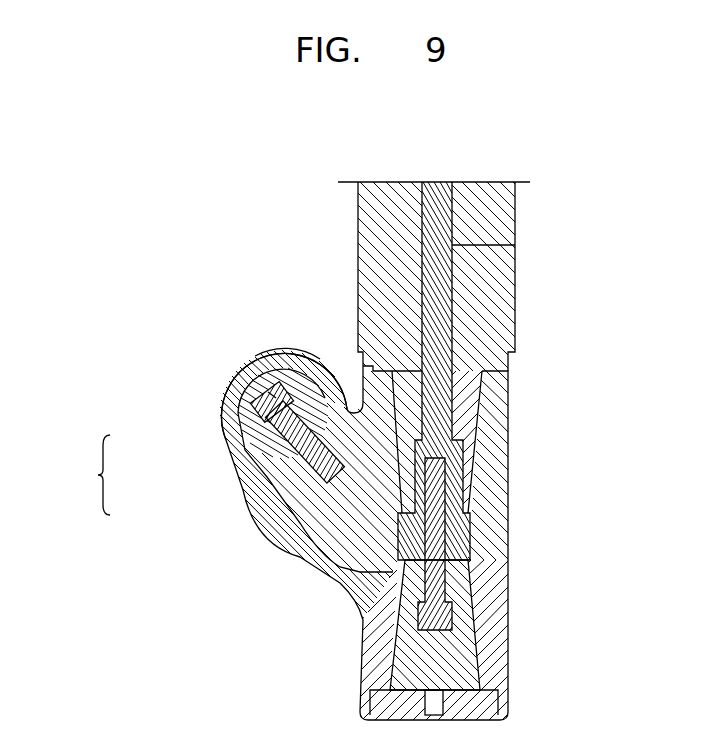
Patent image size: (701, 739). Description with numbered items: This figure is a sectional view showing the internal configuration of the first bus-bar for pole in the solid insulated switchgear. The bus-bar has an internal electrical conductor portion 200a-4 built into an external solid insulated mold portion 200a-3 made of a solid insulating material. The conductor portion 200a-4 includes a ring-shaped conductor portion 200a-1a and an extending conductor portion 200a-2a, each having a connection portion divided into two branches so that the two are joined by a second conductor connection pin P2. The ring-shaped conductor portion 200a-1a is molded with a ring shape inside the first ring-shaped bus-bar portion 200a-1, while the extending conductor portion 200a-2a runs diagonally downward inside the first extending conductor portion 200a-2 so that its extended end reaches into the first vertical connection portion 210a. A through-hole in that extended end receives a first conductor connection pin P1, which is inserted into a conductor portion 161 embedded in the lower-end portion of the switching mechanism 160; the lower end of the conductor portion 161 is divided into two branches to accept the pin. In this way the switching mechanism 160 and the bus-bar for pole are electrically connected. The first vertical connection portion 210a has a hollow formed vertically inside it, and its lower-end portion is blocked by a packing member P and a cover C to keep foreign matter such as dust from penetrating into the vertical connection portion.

The switching mechanism 160 is at (515, 203).
The conductor portion 161 is at (515, 245).
The first ring-shaped bus-bar portion 200a-1 is at (232, 380).
The ring-shaped conductor portion 200a-1a is at (258, 418).
The first extending conductor portion 200a-2 is at (285, 545).
The extending conductor portion 200a-2a is at (265, 480).
The mold portion 200a-3 is at (293, 350).
The conductor portion 200a-4 is at (69, 475).
The first vertical connection portion 210a is at (497, 497).
The packing member P is at (470, 672).
The first conductor connection pin P1 is at (453, 618).
The second conductor connection pin P2 is at (273, 395).
The cover C is at (505, 712).